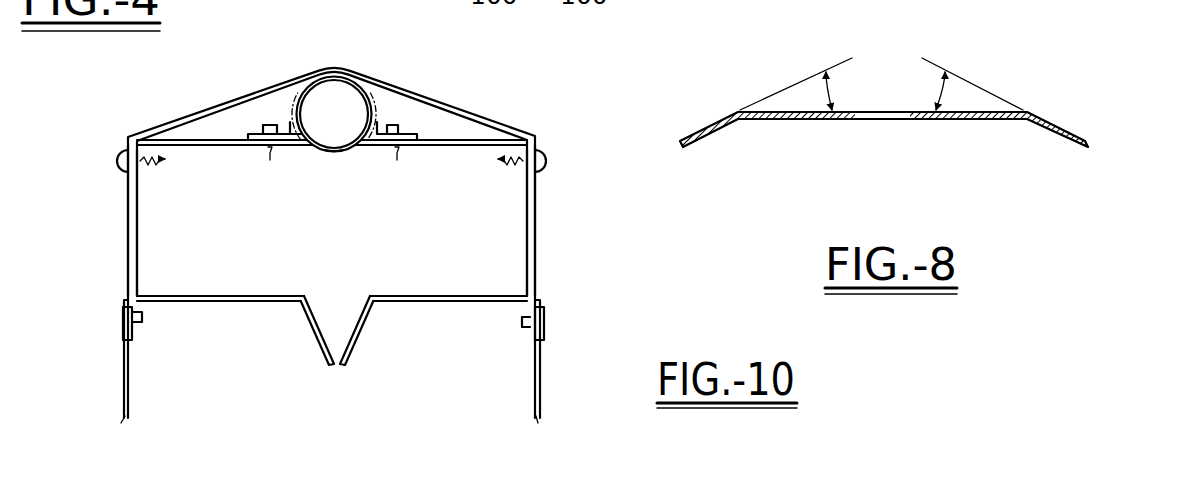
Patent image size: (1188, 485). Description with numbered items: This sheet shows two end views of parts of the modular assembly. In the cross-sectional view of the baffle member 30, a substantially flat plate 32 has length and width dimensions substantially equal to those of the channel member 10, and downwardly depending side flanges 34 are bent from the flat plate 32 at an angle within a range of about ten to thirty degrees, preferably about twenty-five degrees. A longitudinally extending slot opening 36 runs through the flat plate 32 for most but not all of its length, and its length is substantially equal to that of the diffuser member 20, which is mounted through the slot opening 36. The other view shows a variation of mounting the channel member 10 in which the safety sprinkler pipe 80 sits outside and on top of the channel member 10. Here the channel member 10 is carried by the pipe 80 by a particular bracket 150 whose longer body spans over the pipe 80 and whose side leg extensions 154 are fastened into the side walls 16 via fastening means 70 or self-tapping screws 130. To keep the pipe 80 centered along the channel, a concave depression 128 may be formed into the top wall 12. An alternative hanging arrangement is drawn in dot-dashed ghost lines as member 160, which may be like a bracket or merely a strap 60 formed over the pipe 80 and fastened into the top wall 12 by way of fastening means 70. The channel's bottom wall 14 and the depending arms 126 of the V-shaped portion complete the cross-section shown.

In FIG. 10, the channel member 10 is at (247, 307).
In FIG. 10, the top wall 12 is at (228, 147).
In FIG. 10, the bottom plate 14 is at (262, 296).
In FIG. 10, the side walls 16 is at (138, 242).
In FIG. 10, the diffuser member 20 is at (332, 326).
In FIG. 10, the strap 60 is at (123, 362).
In FIG. 10, the fastening means 70 is at (270, 152).
In FIG. 10, the safety sprinkler pipe 80 is at (358, 83).
In FIG. 10, the channel arm 126 is at (362, 340).
In FIG. 10, the concave depression 128 is at (340, 152).
In FIG. 10, the self-tapping screws 130 is at (122, 165).
In FIG. 10, the bracket 150 is at (213, 108).
In FIG. 10, the side leg extensions 154 is at (128, 240).
In FIG. 10, the ghost-line hanging member 160 is at (412, 132).
In FIG. 8, the baffle member 30 is at (1027, 98).
In FIG. 8, the flat plate 32 is at (790, 120).
In FIG. 8, the side flanges 34 is at (700, 132).
In FIG. 8, the slot opening 36 is at (890, 120).